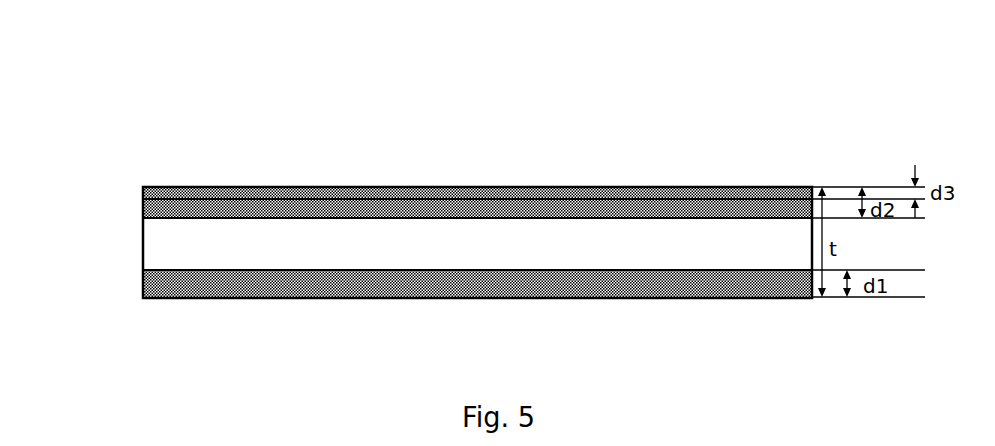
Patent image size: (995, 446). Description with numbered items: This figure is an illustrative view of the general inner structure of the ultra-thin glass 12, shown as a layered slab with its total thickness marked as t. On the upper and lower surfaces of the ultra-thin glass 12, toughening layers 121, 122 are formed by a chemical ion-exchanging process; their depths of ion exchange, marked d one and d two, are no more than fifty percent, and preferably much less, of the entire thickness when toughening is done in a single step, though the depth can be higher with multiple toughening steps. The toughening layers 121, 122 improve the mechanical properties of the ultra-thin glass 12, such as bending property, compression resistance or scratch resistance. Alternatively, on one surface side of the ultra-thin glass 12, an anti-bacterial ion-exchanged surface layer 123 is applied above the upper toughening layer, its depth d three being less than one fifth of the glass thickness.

The ultra-thin glass 12 is at (427, 217).
The toughening layer 121 is at (373, 280).
The toughening layer 122 is at (595, 212).
The anti-bacterial ion-exchanged surface layer 123 is at (638, 190).